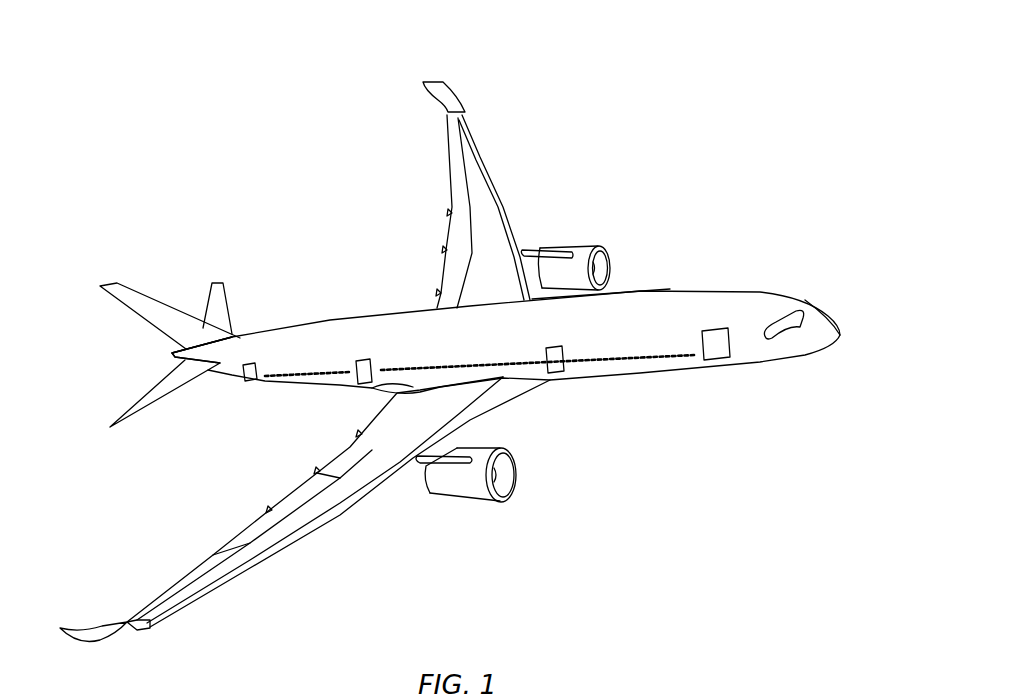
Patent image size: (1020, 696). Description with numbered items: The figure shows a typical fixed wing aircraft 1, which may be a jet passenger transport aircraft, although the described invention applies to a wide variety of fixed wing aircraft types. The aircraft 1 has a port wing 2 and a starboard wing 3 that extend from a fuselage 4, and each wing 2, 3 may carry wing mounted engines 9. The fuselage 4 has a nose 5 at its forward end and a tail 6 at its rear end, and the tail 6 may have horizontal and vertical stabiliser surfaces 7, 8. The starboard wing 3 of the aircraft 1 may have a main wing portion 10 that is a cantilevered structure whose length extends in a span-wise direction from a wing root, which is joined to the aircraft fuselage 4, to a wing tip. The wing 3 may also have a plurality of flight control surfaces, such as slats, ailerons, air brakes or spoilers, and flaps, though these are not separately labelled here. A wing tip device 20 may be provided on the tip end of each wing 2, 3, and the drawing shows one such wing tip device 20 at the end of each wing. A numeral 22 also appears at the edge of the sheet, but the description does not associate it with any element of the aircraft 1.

The aircraft 1 is at (680, 152).
The port wing 2 is at (483, 198).
The starboard wing 3 is at (327, 493).
The fuselage 4 is at (388, 340).
The nose 5 is at (839, 332).
The tail 6 is at (177, 356).
The horizontal stabiliser surfaces 7 is at (217, 303).
The vertical stabiliser surface 8 is at (132, 298).
The wing mounted engines 9 is at (599, 268).
The main wing portion 10 is at (365, 465).
The wing tip device 20 is at (454, 93).
The sheet numeral 22 is at (820, 690).